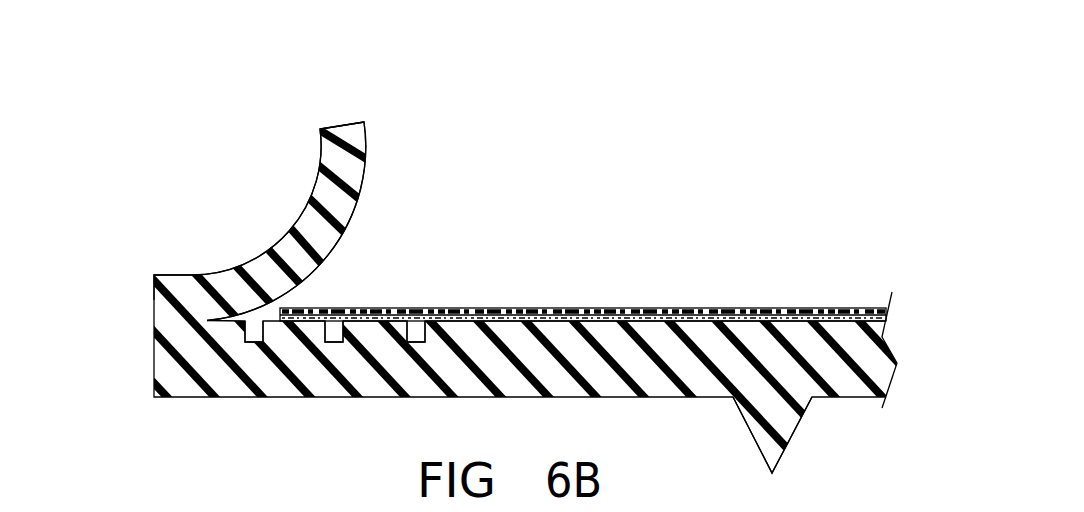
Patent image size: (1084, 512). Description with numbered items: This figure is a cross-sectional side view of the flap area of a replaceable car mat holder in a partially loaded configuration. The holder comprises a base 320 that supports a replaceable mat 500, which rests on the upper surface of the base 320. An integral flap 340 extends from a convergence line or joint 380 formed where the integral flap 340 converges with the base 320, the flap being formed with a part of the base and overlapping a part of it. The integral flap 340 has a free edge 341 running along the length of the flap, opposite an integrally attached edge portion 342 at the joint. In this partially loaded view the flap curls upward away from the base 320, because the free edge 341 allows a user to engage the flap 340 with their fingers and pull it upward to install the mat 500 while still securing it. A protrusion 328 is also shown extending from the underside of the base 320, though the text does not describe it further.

The base 320 is at (220, 365).
The protrusion 328 is at (789, 440).
The integral flap 340 is at (340, 245).
The free edge 341 is at (342, 125).
The integrally attached edge portion 342 is at (154, 279).
The convergence line or joint 380 is at (207, 321).
The replaceable mat 500 is at (642, 308).